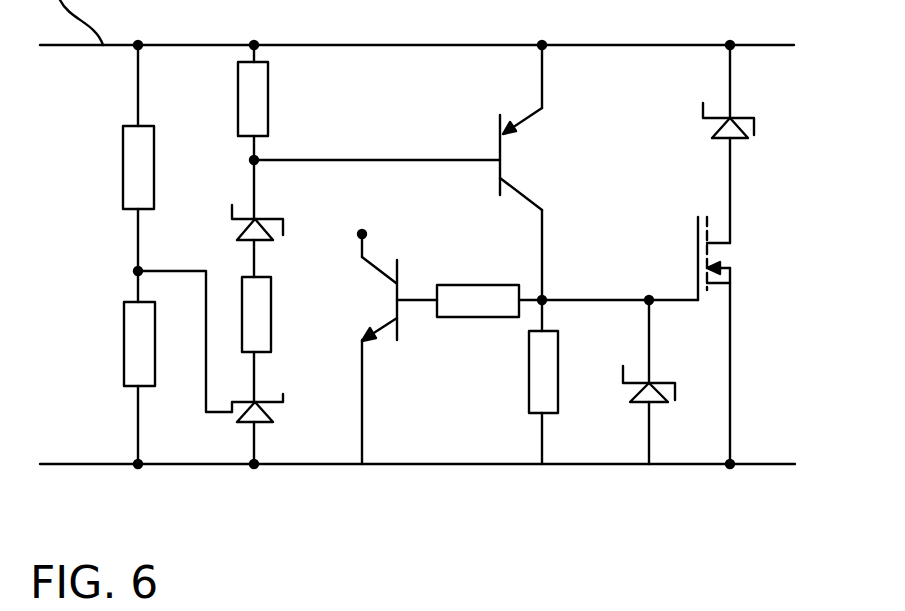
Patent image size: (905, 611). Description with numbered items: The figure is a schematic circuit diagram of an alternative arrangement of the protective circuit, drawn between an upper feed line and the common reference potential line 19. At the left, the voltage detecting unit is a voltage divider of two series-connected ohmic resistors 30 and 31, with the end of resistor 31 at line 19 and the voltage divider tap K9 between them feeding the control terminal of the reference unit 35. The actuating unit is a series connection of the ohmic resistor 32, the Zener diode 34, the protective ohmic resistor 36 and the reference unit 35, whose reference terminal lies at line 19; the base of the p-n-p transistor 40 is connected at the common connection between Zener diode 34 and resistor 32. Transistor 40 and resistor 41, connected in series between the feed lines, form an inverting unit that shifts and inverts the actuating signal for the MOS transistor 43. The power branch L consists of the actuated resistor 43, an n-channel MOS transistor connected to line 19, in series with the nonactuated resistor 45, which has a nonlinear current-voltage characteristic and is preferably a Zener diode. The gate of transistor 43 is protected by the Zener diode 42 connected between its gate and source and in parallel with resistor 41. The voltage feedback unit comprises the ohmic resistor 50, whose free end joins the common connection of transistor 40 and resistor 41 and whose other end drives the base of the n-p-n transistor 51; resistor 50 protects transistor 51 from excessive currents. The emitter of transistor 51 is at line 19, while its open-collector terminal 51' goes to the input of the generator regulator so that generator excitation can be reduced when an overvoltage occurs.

The feed line 19 is at (108, 466).
The ohmic resistor 30 is at (131, 191).
The ohmic resistor 31 is at (131, 327).
The ohmic resistor 32 is at (262, 110).
The Zener diode 34 is at (265, 241).
The reference unit 35 is at (270, 412).
The ohmic resistor 36 is at (265, 327).
The p-n-p transistor 40 is at (508, 160).
The resistor 41 is at (552, 392).
The Zener diode 42 is at (658, 403).
The actuated resistor 43 is at (720, 255).
The nonactuated resistor 45 is at (745, 140).
The ohmic resistor 50 is at (491, 290).
The n-p-n transistor 51 is at (399, 349).
The collector terminal 51' is at (377, 211).
The power branch L is at (732, 405).
The voltage divider tap K9 is at (156, 332).